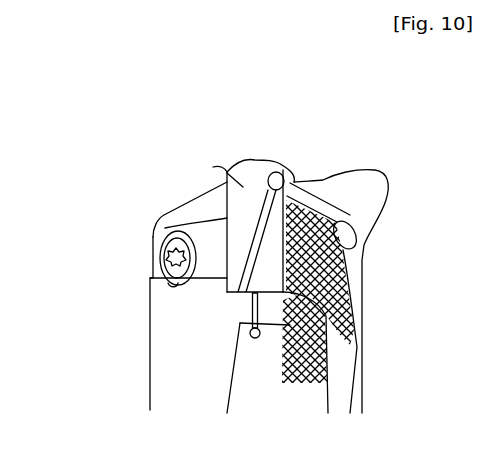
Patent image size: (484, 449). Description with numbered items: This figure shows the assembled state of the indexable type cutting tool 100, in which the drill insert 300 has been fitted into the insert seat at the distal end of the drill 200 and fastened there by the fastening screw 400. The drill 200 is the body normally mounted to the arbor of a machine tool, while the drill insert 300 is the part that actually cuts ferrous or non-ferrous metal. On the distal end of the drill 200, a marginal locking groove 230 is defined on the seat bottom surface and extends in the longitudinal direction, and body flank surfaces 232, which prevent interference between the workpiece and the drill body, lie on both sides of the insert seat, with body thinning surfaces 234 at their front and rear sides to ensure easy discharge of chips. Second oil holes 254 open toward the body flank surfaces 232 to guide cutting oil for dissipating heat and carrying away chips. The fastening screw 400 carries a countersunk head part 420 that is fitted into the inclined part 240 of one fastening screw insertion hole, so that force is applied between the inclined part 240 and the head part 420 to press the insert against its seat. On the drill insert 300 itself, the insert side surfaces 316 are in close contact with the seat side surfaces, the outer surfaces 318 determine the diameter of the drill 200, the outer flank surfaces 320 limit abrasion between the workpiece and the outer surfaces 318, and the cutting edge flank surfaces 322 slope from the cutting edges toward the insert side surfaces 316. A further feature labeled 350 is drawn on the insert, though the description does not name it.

The indexable type cutting tool 100 is at (278, 90).
The drill 200 is at (146, 305).
The marginal locking groove 230 is at (240, 315).
The body flank surfaces 232 is at (200, 207).
The body thinning surfaces 234 is at (340, 200).
The inclined part 240 is at (178, 282).
The second oil holes 254 is at (345, 236).
The drill insert 300 is at (231, 161).
The insert side surfaces 316 is at (337, 276).
The outer surfaces 318 is at (296, 188).
The outer flank surfaces 320 is at (240, 214).
The cutting edge flank surfaces 322 is at (213, 167).
The notch 350 is at (281, 184).
The fastening screw 400 is at (162, 250).
The head part 420 is at (160, 272).